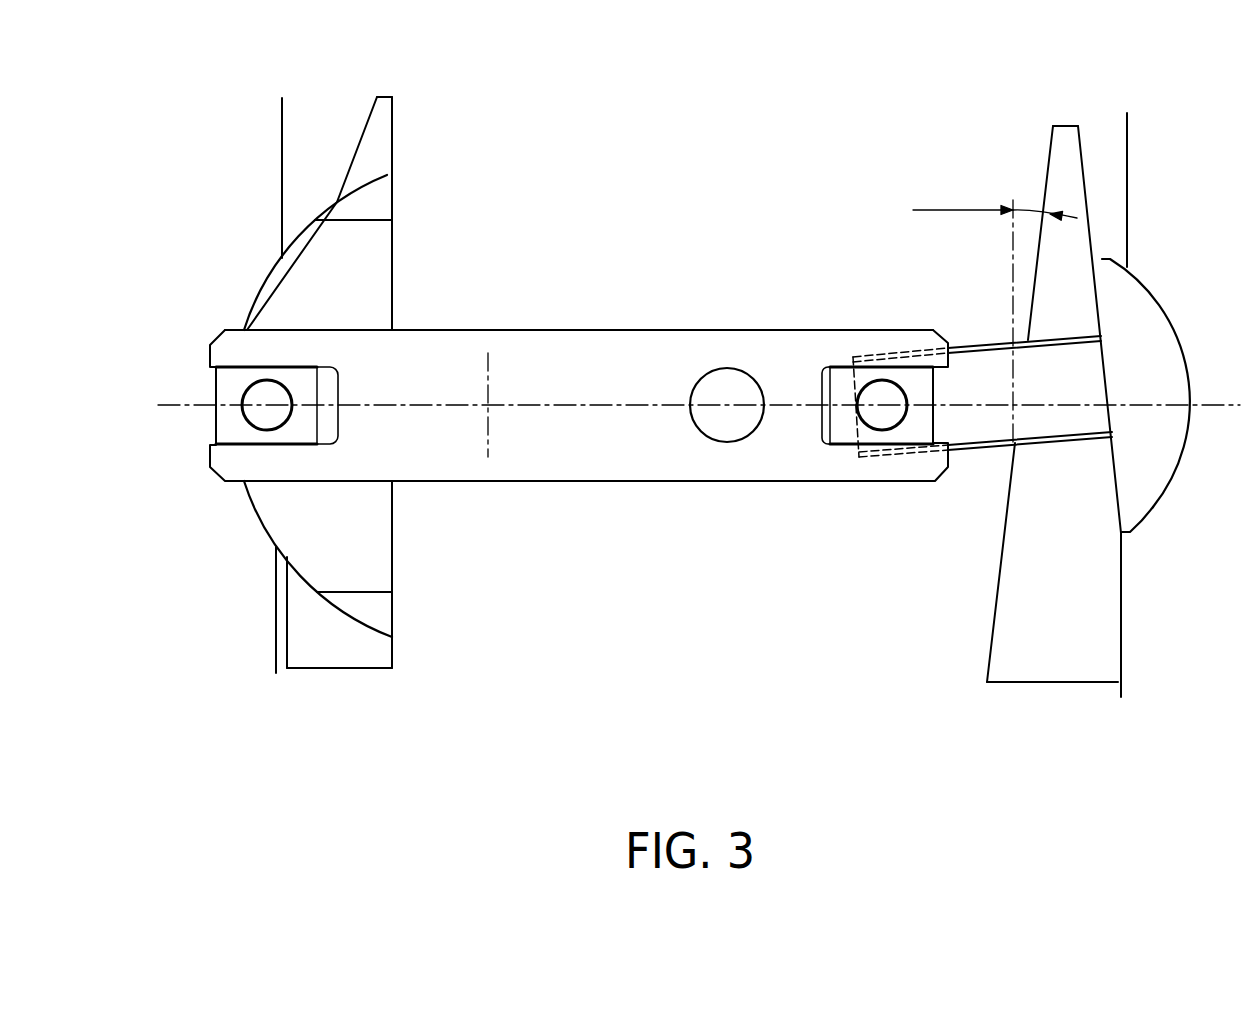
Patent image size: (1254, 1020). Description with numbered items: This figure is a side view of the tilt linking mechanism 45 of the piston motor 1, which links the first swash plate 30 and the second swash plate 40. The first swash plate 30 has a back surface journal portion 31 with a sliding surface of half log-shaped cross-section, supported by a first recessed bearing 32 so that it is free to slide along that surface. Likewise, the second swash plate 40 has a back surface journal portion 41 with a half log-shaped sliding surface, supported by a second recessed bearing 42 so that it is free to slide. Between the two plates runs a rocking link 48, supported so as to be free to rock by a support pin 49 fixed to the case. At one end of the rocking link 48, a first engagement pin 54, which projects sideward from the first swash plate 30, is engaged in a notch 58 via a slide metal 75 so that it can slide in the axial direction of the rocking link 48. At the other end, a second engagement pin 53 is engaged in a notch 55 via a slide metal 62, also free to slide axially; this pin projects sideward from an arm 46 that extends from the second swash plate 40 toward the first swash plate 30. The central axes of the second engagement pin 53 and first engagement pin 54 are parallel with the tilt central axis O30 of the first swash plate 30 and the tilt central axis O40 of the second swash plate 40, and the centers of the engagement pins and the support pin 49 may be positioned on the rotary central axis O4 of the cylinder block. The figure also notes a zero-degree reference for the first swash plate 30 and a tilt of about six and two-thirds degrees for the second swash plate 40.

The piston motor 1 is at (1152, 118).
The first swash plate 30 is at (402, 652).
The back surface journal portion 31 is at (250, 505).
The first recessed bearing 32 is at (276, 547).
The second swash plate 40 is at (973, 667).
The back surface journal portion 41 is at (1178, 470).
The second recessed bearing 42 is at (1150, 513).
The tilt linking mechanism 45 is at (645, 489).
The arm 46 is at (965, 452).
The rocking link 48 is at (605, 330).
The support pin 49 is at (727, 368).
The second engagement pin 53 is at (890, 395).
The first engagement pin 54 is at (258, 398).
The notch 55 is at (822, 446).
The notch 58 is at (327, 372).
The slide metal 62 is at (845, 433).
The slide metal 75 is at (227, 425).
The tilt central axis of the first swash plate O30 is at (488, 407).
The rotary central axis of the cylinder block O4 is at (587, 407).
The tilt central axis of the second swash plate O40 is at (1012, 408).